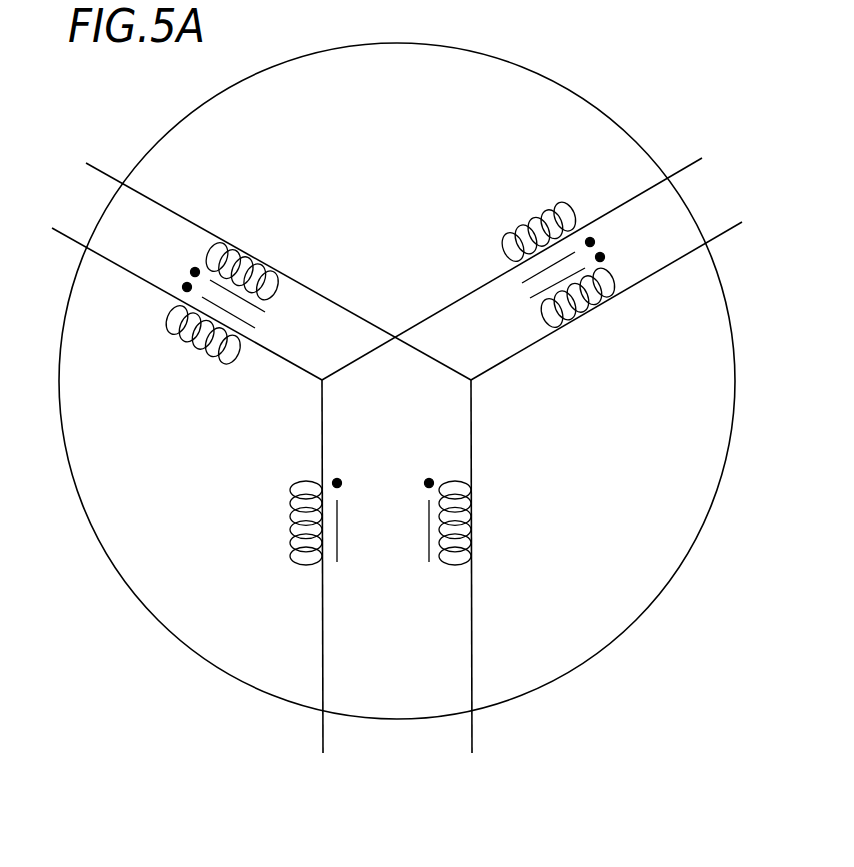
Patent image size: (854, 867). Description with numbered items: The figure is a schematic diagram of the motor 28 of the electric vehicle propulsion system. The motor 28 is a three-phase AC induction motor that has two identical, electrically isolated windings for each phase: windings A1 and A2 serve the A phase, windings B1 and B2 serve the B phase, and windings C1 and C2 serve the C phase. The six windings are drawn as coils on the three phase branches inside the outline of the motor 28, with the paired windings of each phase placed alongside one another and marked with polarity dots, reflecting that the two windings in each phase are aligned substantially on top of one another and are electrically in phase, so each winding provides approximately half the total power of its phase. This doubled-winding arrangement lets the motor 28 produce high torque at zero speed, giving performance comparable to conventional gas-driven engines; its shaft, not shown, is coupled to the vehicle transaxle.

The motor 28 is at (718, 488).
The winding A1 is at (39, 208).
The winding A2 is at (75, 143).
The winding B1 is at (334, 772).
The winding B2 is at (483, 772).
The winding C1 is at (715, 140).
The winding C2 is at (752, 205).